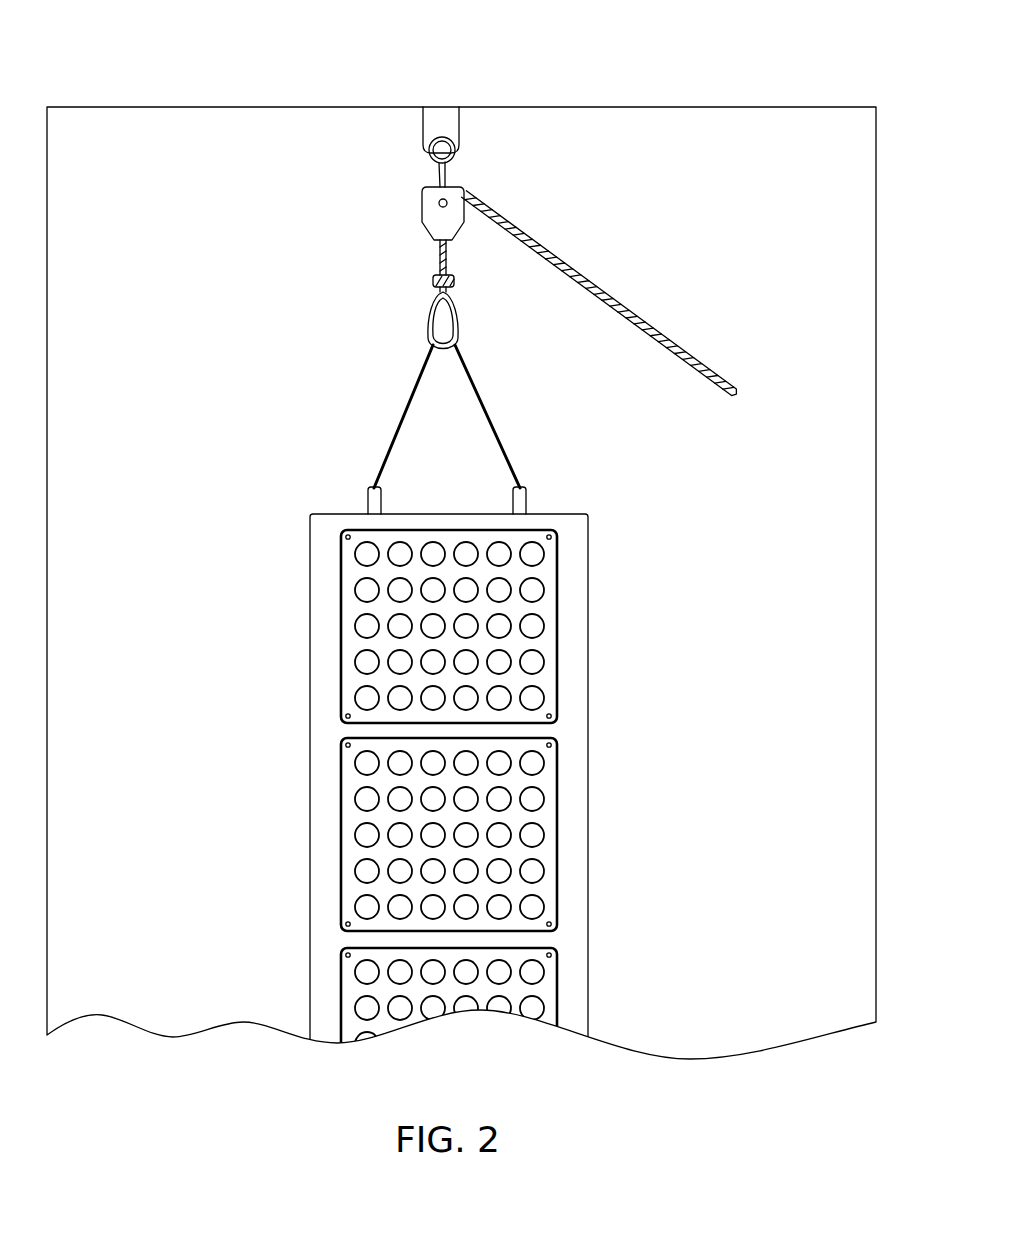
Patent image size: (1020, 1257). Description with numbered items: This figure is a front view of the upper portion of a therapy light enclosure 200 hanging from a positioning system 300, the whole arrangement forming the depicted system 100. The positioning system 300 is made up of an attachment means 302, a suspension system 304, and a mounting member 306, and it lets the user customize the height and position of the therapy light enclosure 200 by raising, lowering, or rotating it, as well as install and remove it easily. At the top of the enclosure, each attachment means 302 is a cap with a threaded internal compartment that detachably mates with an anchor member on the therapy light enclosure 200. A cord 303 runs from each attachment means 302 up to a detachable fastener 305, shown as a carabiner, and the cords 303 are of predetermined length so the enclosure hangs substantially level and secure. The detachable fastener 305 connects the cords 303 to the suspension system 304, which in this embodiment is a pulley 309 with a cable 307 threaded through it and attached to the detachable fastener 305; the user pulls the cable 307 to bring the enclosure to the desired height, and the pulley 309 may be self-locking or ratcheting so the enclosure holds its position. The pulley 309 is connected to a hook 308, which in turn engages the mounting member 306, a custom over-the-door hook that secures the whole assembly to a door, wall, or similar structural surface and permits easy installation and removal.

The system 100 is at (197, 146).
The therapy light enclosure 200 is at (270, 729).
The positioning system 300 is at (464, 281).
The attachment means 302 is at (527, 494).
The cord 303 is at (488, 407).
The suspension system 304 is at (359, 202).
The detachable fastener 305 is at (429, 303).
The mounting member 306 is at (441, 110).
The cable 307 is at (578, 275).
The hook 308 is at (456, 164).
The pulley 309 is at (430, 191).